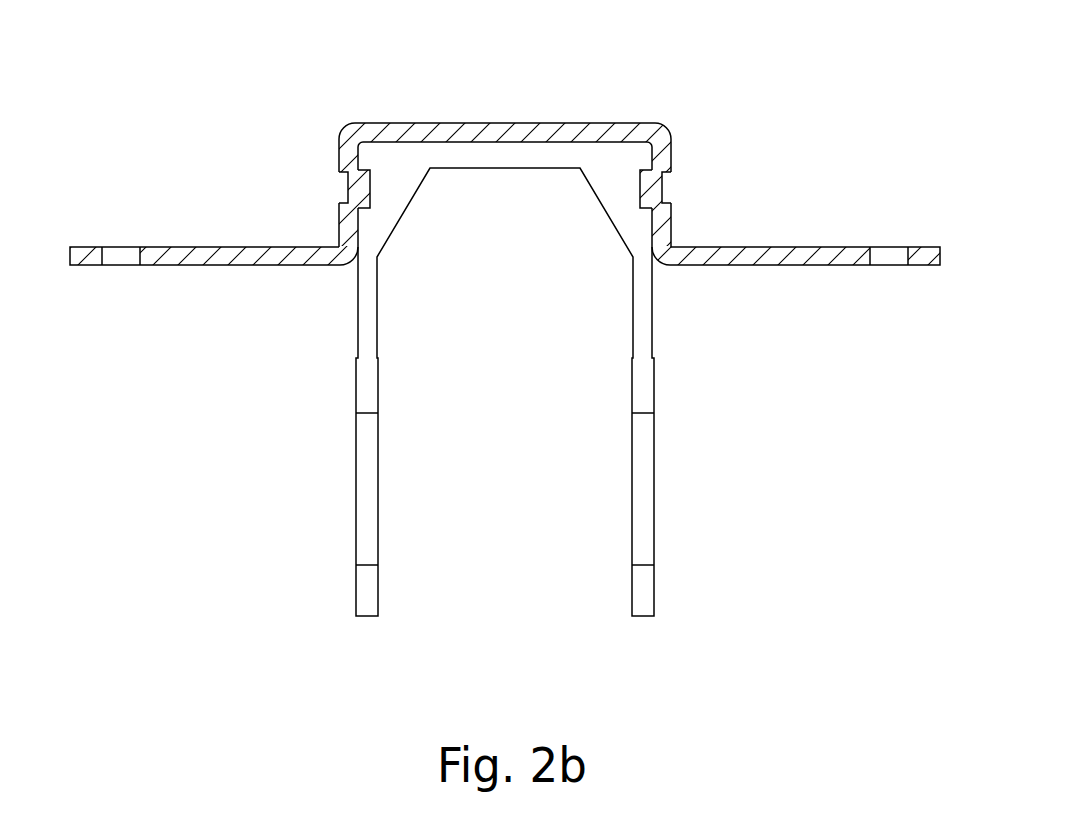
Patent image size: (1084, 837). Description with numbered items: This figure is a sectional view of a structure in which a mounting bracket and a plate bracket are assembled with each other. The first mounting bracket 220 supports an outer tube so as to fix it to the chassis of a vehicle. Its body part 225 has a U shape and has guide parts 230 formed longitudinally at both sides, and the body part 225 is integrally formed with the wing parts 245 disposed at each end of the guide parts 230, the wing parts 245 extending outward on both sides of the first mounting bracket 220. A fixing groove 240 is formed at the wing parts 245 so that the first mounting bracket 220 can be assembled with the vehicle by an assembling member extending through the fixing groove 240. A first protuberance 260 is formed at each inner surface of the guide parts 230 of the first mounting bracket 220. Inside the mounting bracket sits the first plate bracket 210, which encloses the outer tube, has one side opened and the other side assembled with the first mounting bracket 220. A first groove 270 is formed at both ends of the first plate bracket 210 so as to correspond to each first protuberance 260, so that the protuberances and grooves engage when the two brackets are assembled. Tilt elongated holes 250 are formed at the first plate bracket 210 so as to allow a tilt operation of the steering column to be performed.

The first mounting bracket 220 is at (537, 308).
The body part 225 is at (543, 123).
The guide parts 230 is at (345, 228).
The fixing groove 240 is at (123, 245).
The wing parts 245 is at (228, 265).
The first protuberance 260 is at (338, 186).
The first groove 270 is at (371, 180).
The first plate bracket 210 is at (653, 398).
The tilt elongated holes 250 is at (645, 493).